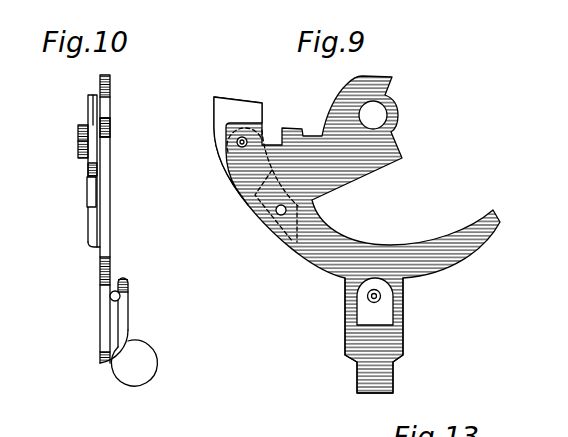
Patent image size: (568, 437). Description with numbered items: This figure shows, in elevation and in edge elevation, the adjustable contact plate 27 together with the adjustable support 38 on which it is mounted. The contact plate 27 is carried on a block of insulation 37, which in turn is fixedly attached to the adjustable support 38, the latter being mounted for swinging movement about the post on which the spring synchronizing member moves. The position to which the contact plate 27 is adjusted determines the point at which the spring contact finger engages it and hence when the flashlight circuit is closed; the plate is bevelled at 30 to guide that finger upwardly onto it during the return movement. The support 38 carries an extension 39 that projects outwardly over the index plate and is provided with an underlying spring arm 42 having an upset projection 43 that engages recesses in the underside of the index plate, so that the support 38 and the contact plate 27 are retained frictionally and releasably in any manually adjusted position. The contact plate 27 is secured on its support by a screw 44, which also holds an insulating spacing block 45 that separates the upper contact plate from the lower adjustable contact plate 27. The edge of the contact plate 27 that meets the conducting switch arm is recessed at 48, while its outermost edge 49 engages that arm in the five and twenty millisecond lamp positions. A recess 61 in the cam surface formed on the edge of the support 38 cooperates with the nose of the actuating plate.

In FIG. 10, the adjustable contact plate 27 is at (88, 101).
In FIG. 10, the bevel 30 is at (89, 246).
In FIG. 10, the block of insulation 37 is at (97, 94).
In FIG. 9, the block of insulation 37 is at (214, 100).
In FIG. 10, the adjustable support 38 is at (110, 262).
In FIG. 9, the adjustable support 38 is at (356, 253).
In FIG. 10, the extension 39 is at (101, 344).
In FIG. 9, the extension 39 is at (405, 350).
In FIG. 10, the spring arm 42 is at (131, 312).
In FIG. 9, the spring arm 42 is at (368, 313).
In FIG. 10, the upset projection 43 is at (111, 298).
In FIG. 9, the upset projection 43 is at (385, 297).
In FIG. 9, the screw 44 is at (240, 144).
In FIG. 10, the insulating spacing block 45 is at (81, 152).
In FIG. 9, the insulating spacing block 45 is at (252, 138).
In FIG. 10, the recessed portion 48 is at (93, 199).
In FIG. 9, the recessed portion 48 is at (238, 202).
In FIG. 10, the outermost edge 49 is at (89, 164).
In FIG. 9, the outermost edge 49 is at (218, 151).
In FIG. 10, the recess 61 is at (110, 128).
In FIG. 9, the recess 61 is at (219, 137).